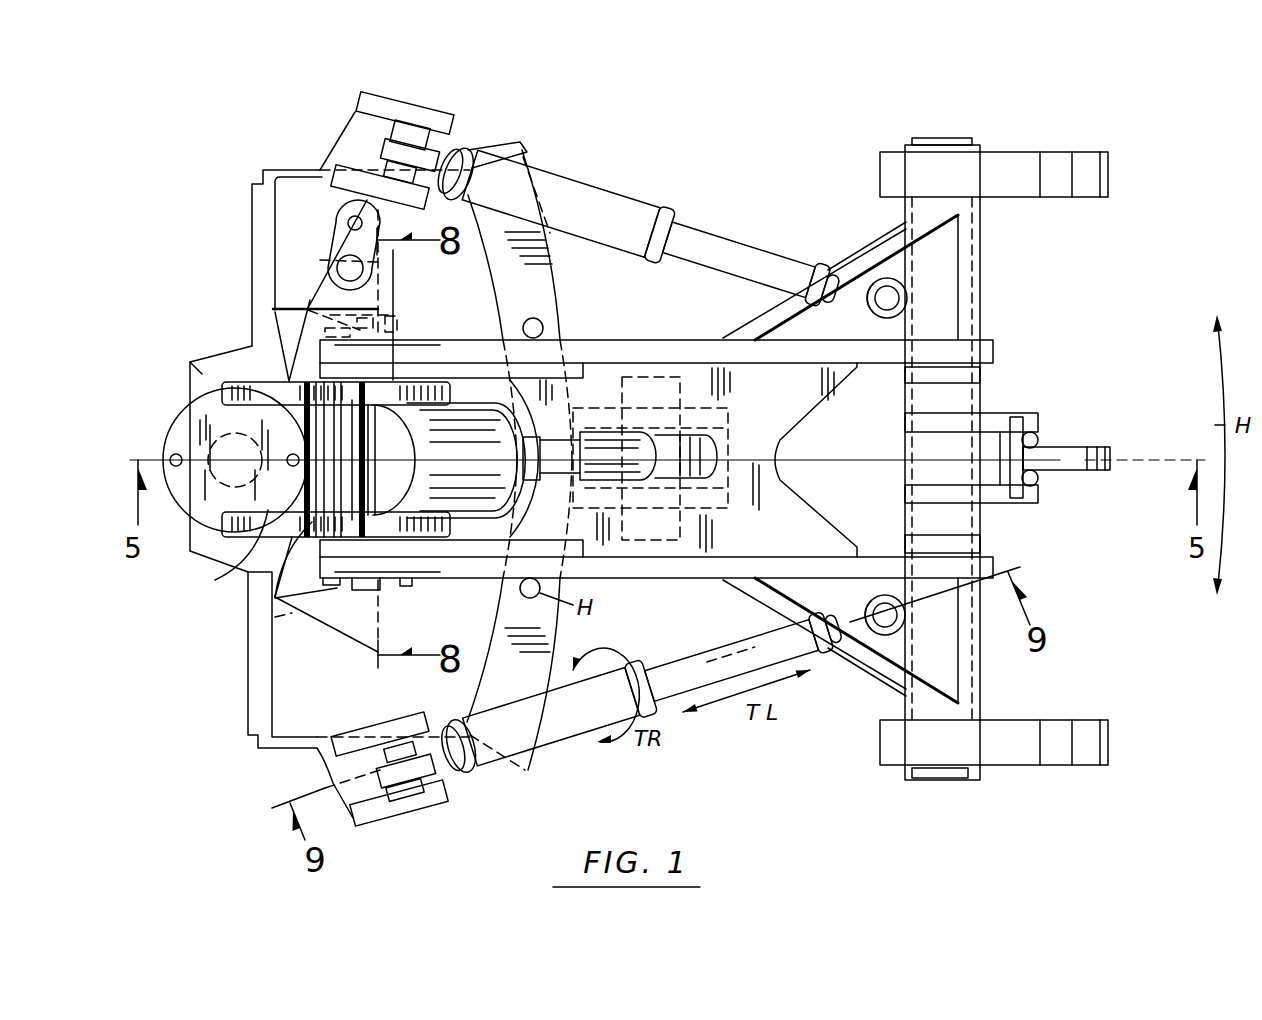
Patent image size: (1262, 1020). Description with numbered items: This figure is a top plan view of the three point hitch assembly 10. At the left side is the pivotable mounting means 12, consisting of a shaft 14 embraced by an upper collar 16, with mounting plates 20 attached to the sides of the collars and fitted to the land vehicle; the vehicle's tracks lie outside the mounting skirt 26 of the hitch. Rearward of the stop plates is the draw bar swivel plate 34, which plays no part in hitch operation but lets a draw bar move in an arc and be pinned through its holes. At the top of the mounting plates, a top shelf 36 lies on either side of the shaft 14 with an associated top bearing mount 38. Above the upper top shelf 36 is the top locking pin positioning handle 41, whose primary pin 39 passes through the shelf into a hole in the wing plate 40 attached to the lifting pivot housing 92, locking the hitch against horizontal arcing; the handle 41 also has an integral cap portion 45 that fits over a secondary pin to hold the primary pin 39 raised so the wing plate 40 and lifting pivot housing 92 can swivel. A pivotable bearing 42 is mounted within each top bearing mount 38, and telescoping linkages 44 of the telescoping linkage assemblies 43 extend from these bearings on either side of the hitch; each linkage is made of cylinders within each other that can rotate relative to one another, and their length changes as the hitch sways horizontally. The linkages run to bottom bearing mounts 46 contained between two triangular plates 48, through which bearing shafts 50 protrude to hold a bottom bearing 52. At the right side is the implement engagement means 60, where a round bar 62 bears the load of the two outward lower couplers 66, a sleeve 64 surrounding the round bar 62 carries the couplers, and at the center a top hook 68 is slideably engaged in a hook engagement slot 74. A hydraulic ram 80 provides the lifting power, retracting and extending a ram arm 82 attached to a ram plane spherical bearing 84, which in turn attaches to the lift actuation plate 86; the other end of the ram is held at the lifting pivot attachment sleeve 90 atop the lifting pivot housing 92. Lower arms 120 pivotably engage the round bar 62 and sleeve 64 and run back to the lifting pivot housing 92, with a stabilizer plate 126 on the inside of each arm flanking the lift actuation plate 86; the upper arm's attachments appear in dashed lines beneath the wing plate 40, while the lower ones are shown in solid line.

The three point hitch assembly 10 is at (718, 140).
The pivotable mounting means 12 is at (208, 350).
The shaft 14 is at (223, 433).
The upper collar 16 is at (190, 362).
The mounting plates 20 is at (252, 190).
The mounting skirt 26 is at (522, 148).
The draw bar swivel plate 34 is at (504, 296).
The top shelf 36 is at (317, 693).
The top bearing mount 38 is at (422, 103).
The primary pin 39 is at (340, 268).
The wing plate 40 is at (320, 260).
The top locking pin positioning handle 41 is at (320, 230).
The pivotable bearing 42 is at (463, 148).
The telescoping linkage assemblies 43 is at (685, 725).
The telescoping linkages 44 is at (605, 203).
The integral cap portion 45 is at (350, 223).
The bottom bearing mounts 46 is at (830, 250).
The triangular plates 48 is at (945, 668).
The bearing shafts 50 is at (868, 297).
The bottom bearing 52 is at (882, 635).
The implement engagement means 60 is at (1025, 130).
The round bar 62 is at (950, 138).
The sleeve 64 is at (980, 250).
The lower couplers 66 is at (1058, 152).
The top hook 68 is at (1080, 446).
The hook engagement slot 74 is at (1035, 445).
The hydraulic ram 80 is at (361, 500).
The ram arm 82 is at (603, 457).
The ram plane spherical bearing 84 is at (663, 457).
The lift actuation plate 86 is at (752, 411).
The lifting pivot attachment sleeve 90 is at (262, 605).
The lifting pivot housing 92 is at (240, 574).
The lower arms 120 is at (690, 350).
The stabilizer plate 126 is at (458, 367).